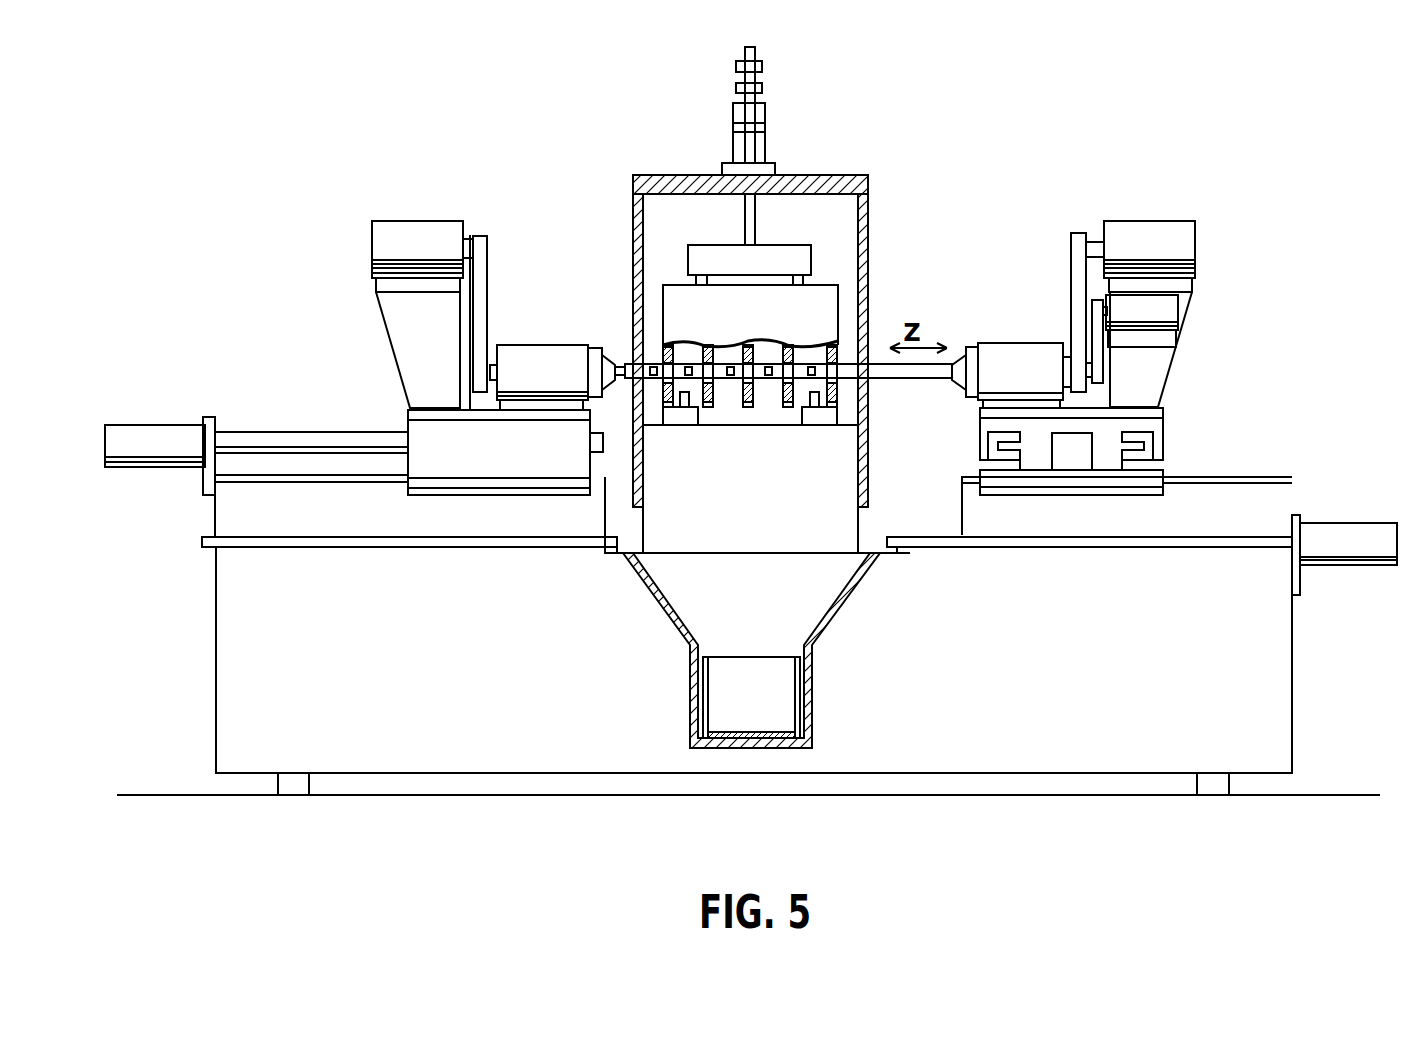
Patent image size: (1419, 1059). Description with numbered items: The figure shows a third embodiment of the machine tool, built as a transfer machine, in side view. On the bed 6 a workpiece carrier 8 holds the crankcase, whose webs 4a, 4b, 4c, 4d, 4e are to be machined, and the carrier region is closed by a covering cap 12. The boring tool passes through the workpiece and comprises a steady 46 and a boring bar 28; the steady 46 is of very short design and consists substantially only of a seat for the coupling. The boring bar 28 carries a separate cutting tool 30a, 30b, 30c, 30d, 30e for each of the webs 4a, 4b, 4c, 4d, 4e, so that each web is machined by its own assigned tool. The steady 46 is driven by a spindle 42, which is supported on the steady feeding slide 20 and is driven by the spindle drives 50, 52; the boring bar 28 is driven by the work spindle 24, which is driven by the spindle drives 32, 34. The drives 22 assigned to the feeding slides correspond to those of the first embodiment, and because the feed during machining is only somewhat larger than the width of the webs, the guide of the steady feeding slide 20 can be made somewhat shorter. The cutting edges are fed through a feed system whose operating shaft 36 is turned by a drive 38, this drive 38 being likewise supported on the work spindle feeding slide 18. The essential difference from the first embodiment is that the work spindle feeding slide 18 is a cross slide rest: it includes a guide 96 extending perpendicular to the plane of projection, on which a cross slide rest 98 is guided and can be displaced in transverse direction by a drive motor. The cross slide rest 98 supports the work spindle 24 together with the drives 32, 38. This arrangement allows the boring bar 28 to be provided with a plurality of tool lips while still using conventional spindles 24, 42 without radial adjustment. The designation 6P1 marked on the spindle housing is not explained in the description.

The web 4a is at (672, 343).
The web 4b is at (706, 343).
The web 4c is at (748, 343).
The web 4d is at (790, 343).
The web 4e is at (832, 343).
The bed 6 is at (486, 687).
The workpiece carrier 8 is at (755, 538).
The covering cap 12 is at (693, 180).
The work spindle feeding slide 18 is at (1055, 477).
The steady feeding slide 20 is at (476, 465).
The drive 22 is at (143, 432).
The work spindle 24 is at (1018, 362).
The boring bar 28 is at (878, 364).
The cutting tool 30a is at (652, 378).
The cutting tool 30b is at (688, 378).
The cutting tool 30c is at (728, 378).
The cutting tool 30d is at (768, 378).
The cutting tool 30e is at (810, 378).
The spindle drive 32 is at (1180, 237).
The spindle drive 34 is at (1075, 275).
The operating shaft 36 is at (1097, 353).
The drive 38 is at (1165, 307).
The spindle 42 is at (548, 360).
The steady 46 is at (620, 366).
The spindle drive 50 is at (412, 237).
The spindle drive 52 is at (482, 236).
The guide 96 is at (1130, 435).
The cross slide rest 98 is at (1168, 422).
The motor designation 6P1 is at (542, 368).